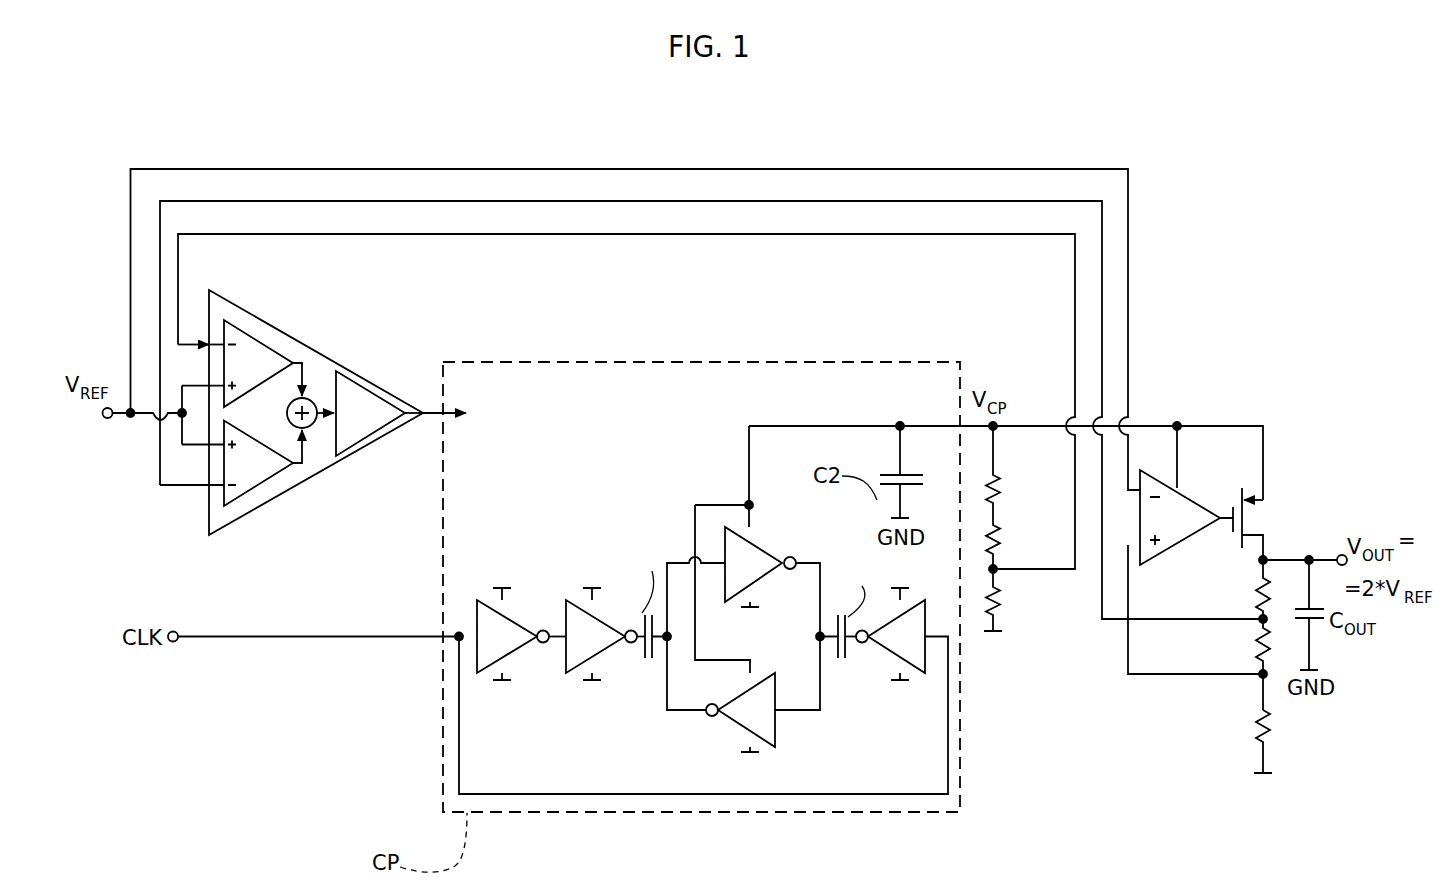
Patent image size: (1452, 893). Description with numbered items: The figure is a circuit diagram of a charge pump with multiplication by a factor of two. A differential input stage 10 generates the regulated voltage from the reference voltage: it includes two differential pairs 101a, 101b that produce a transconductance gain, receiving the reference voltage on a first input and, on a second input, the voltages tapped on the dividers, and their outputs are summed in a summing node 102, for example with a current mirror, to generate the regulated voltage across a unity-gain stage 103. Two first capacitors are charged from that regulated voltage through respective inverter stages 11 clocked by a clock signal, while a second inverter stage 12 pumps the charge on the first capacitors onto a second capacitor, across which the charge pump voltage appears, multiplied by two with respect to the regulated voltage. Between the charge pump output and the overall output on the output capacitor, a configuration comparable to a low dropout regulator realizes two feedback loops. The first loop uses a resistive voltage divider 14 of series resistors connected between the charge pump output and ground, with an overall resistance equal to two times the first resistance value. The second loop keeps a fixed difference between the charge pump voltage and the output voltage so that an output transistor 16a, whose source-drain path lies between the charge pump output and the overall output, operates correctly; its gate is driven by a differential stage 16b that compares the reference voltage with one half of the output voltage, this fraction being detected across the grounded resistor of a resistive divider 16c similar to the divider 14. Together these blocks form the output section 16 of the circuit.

The differential input stage 10 is at (320, 425).
The differential pair 101a is at (255, 352).
The differential pair 101b is at (252, 481).
The summing node 102 is at (308, 426).
The unity-gain stage 103 is at (360, 396).
The inverter stage 11 is at (547, 722).
The second inverter stage 12 is at (722, 736).
The resistive voltage divider 14 is at (1000, 668).
The output stage 16 is at (1204, 594).
The output transistor 16a is at (1282, 466).
The differential stage 16b is at (1144, 580).
The resistive divider 16c is at (1254, 810).